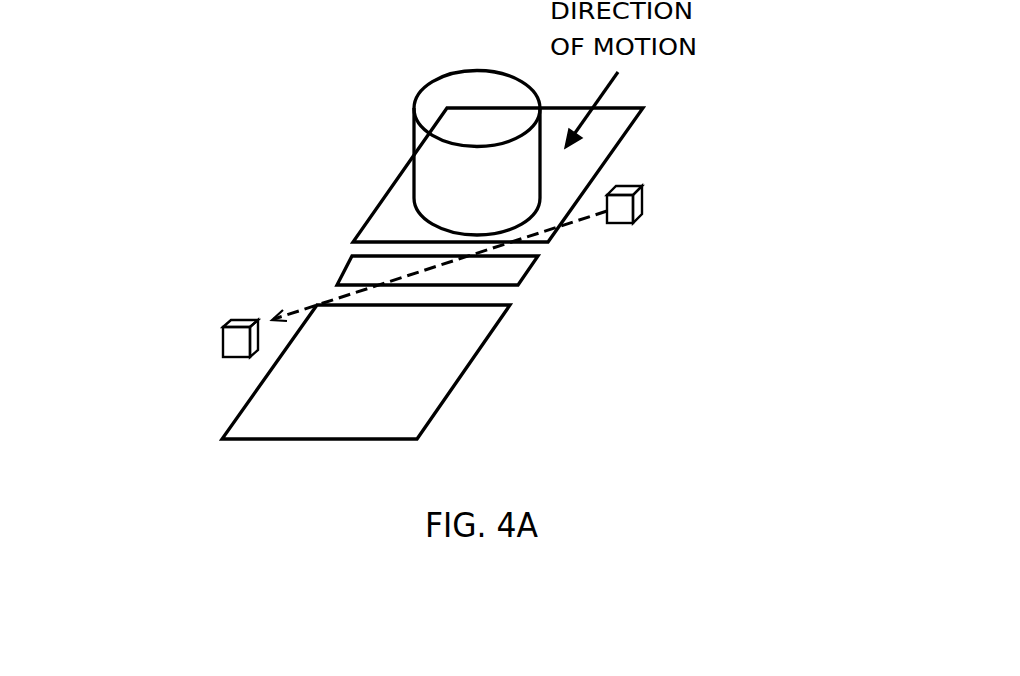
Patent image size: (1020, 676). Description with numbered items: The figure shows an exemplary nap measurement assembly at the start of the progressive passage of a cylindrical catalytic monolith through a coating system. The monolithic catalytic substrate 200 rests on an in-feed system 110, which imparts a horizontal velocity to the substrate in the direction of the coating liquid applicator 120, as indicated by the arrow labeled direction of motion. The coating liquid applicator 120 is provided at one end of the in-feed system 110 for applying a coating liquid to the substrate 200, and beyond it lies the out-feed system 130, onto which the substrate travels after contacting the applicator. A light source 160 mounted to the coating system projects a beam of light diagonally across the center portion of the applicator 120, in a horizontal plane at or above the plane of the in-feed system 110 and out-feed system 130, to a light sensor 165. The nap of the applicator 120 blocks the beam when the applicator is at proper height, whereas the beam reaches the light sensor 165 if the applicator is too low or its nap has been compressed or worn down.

The in-feed system 110 is at (657, 127).
The coating liquid applicator 120 is at (510, 271).
The out-feed system 130 is at (497, 406).
The light source 160 is at (645, 208).
The light sensor 165 is at (232, 345).
The monolithic catalytic substrate 200 is at (430, 150).